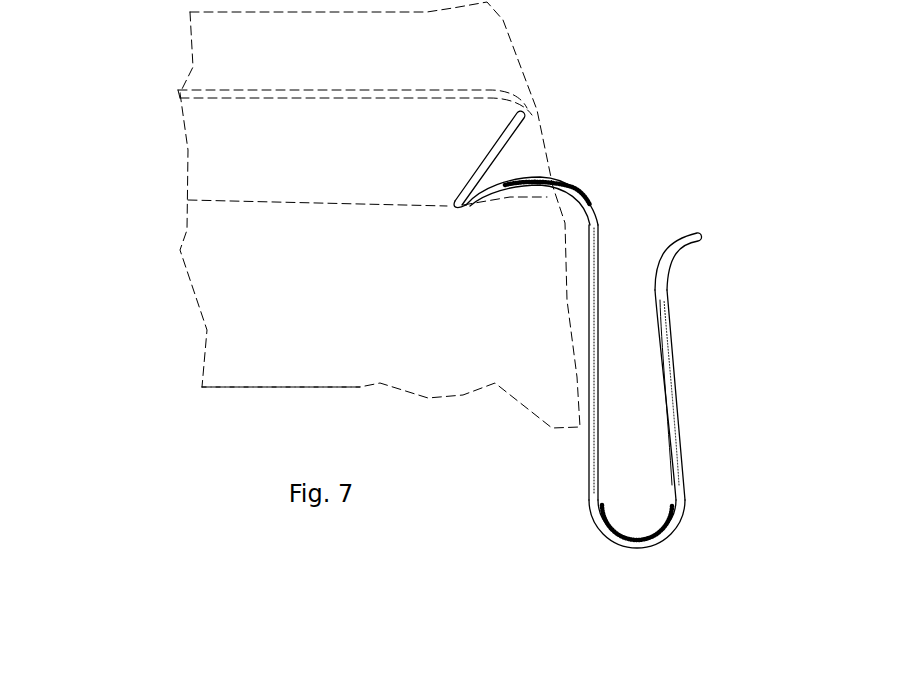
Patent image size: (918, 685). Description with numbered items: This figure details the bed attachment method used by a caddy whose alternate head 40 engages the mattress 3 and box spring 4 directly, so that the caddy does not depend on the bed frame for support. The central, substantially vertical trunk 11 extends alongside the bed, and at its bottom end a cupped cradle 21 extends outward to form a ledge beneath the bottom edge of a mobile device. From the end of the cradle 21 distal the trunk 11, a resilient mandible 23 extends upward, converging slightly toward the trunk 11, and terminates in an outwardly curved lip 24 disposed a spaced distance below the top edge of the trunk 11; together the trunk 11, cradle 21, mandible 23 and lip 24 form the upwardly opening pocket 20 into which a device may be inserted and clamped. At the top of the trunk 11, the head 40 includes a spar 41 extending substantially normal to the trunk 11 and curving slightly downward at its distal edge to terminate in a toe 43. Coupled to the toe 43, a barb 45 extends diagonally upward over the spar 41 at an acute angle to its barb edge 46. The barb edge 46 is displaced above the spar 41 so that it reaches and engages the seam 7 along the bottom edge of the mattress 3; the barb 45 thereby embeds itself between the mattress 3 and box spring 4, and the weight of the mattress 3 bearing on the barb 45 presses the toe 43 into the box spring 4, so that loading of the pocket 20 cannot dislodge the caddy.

The mattress 3 is at (215, 33).
The box spring 4 is at (243, 330).
The seam 7 is at (503, 18).
The trunk 11 is at (589, 219).
The pocket 20 is at (671, 380).
The cradle 21 is at (655, 540).
The mandible 23 is at (668, 325).
The lip 24 is at (675, 247).
The head 40 is at (467, 282).
The spar 41 is at (560, 183).
The toe 43 is at (456, 206).
The barb 45 is at (470, 165).
The barb edge 46 is at (493, 131).